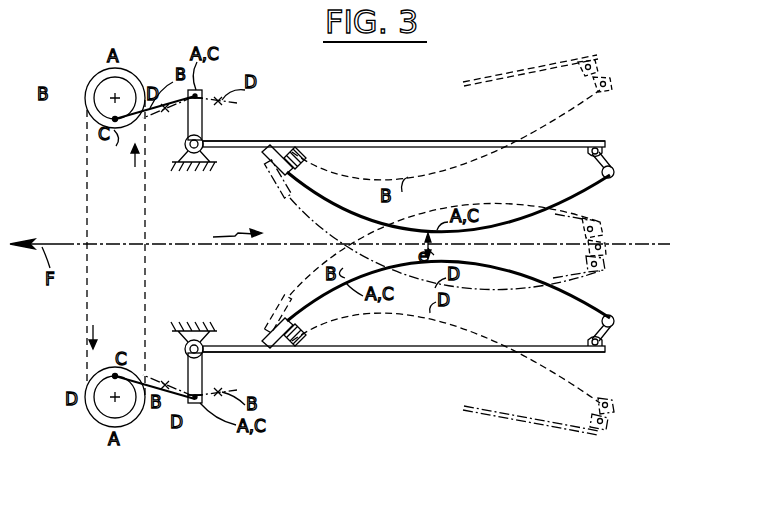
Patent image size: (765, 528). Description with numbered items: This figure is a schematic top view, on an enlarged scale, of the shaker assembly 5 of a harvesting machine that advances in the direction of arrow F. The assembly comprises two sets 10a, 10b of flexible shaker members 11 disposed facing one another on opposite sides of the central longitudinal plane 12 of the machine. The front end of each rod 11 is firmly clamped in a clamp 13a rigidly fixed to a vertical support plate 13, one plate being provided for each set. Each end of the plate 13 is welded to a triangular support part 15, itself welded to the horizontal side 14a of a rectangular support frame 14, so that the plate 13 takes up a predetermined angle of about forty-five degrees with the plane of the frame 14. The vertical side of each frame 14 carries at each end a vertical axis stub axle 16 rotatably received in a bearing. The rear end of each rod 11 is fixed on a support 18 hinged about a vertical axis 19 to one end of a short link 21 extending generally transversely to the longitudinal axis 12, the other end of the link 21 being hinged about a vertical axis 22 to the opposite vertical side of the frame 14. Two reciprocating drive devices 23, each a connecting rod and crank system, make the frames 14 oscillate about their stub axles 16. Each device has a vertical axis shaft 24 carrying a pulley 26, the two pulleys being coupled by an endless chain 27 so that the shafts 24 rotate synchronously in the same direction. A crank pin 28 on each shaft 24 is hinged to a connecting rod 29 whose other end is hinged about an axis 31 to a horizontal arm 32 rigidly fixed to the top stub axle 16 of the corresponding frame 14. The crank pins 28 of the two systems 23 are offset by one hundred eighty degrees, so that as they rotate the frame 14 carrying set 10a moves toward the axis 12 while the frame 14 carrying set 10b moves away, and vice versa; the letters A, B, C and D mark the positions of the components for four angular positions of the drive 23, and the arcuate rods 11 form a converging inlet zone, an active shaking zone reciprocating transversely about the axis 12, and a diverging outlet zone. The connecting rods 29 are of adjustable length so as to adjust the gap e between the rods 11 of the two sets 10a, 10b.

The shaker assembly 5 is at (227, 232).
The set of shaker members 10a is at (612, 204).
The set of shaker members 10b is at (610, 294).
The shaker member 11 is at (520, 258).
The central longitudinal plane 12 is at (662, 244).
The vertical support plate 13 is at (290, 147).
The clamp 13a is at (266, 163).
The rectangular support frame 14 is at (440, 142).
The horizontal side of support frame 14a is at (377, 140).
The support part 15 is at (302, 162).
The stub axle 16 is at (195, 172).
The support 18 is at (601, 177).
The vertical axis 19 is at (615, 172).
The short link 21 is at (600, 147).
The vertical axis 22 is at (590, 152).
The reciprocating motion drive device 23 is at (170, 68).
The vertical axis shaft 24 is at (96, 118).
The pulley 26 is at (93, 83).
The endless chain 27 is at (87, 205).
The crank pin 28 is at (114, 246).
The connecting rod 29 is at (152, 110).
The axis 31 is at (200, 92).
The horizontal arm 32 is at (203, 115).